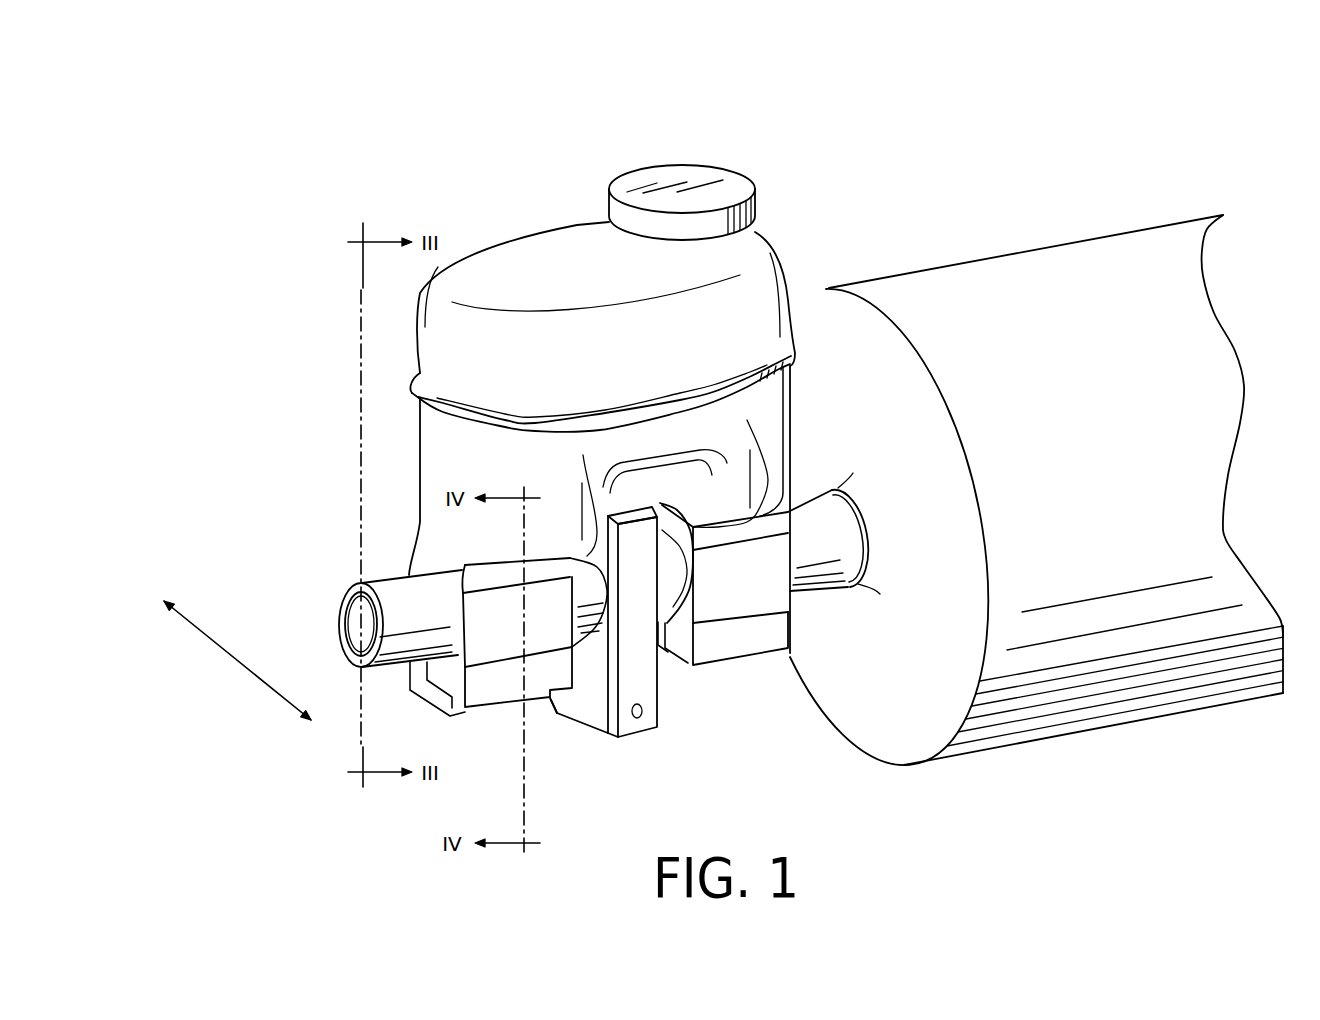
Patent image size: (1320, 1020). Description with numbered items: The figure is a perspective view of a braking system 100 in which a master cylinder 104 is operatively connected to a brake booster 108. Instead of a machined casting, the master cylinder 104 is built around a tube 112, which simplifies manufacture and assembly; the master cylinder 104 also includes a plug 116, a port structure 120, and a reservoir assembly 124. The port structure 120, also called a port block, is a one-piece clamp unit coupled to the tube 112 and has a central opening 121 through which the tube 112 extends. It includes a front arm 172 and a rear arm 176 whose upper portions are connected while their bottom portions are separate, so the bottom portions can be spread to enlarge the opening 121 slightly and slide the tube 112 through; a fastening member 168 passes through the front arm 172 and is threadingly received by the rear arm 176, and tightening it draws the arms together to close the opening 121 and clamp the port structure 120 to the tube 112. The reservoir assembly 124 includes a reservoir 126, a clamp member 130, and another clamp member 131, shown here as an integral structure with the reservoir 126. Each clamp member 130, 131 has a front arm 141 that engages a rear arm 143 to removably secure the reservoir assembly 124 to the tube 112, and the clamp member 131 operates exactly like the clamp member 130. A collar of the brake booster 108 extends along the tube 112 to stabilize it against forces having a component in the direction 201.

The braking system 100 is at (770, 120).
The master cylinder 104 is at (567, 183).
The brake booster 108 is at (943, 248).
The tube 112 is at (391, 585).
The plug 116 is at (357, 629).
The port structure 120 is at (674, 653).
The central opening 121 is at (620, 637).
The reservoir assembly 124 is at (330, 388).
The reservoir 126 is at (503, 243).
The clamp member 130 is at (512, 648).
The clamp member 131 is at (730, 613).
The front arm 141 is at (483, 683).
The rear arm 143 is at (423, 692).
The fastening member 168 is at (640, 720).
The front arm 172 is at (597, 737).
The rear arm 176 is at (556, 714).
The direction 201 is at (206, 643).